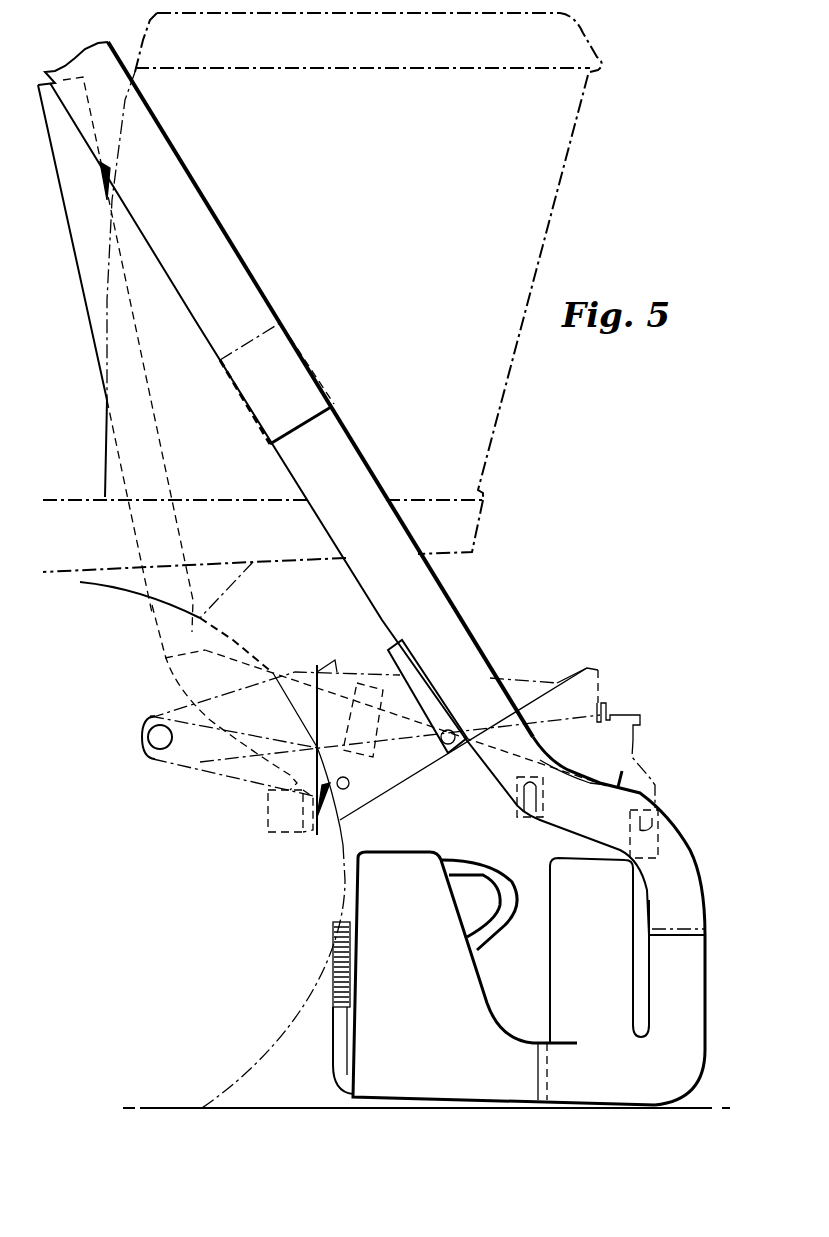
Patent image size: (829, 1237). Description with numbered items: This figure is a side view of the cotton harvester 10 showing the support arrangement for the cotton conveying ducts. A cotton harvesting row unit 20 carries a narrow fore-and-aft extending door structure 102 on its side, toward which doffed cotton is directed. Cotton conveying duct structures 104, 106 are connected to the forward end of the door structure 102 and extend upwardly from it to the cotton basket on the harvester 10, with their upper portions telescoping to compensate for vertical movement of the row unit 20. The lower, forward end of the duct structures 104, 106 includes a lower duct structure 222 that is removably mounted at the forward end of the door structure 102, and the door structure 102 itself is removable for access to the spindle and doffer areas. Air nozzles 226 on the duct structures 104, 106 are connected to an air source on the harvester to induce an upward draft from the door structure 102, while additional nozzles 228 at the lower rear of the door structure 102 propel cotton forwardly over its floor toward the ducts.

The cotton harvester 10 is at (530, 541).
The cotton harvesting row unit 20 is at (674, 781).
The door structure 102 is at (350, 893).
The cotton conveying duct structure 104 is at (487, 793).
The cotton conveying duct structure 106 is at (458, 632).
The lower duct structure 222 is at (688, 832).
The air nozzle 226 is at (283, 833).
The additional nozzle 228 is at (330, 1050).